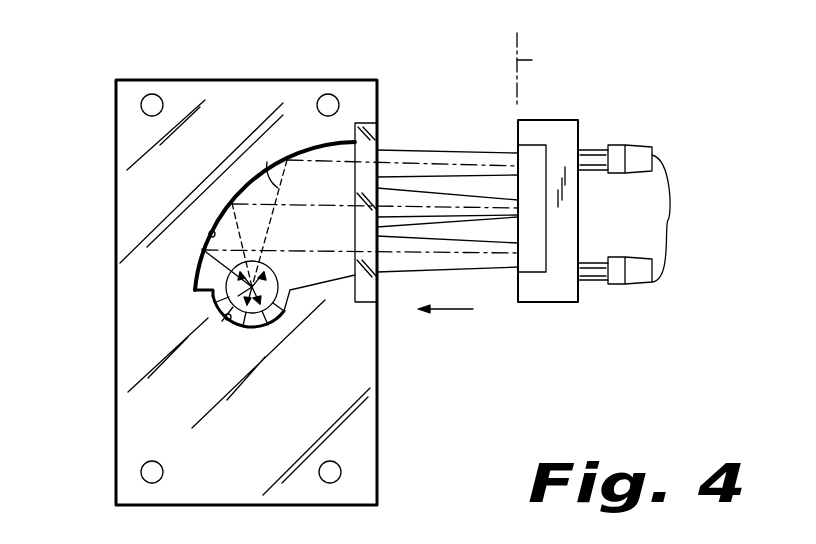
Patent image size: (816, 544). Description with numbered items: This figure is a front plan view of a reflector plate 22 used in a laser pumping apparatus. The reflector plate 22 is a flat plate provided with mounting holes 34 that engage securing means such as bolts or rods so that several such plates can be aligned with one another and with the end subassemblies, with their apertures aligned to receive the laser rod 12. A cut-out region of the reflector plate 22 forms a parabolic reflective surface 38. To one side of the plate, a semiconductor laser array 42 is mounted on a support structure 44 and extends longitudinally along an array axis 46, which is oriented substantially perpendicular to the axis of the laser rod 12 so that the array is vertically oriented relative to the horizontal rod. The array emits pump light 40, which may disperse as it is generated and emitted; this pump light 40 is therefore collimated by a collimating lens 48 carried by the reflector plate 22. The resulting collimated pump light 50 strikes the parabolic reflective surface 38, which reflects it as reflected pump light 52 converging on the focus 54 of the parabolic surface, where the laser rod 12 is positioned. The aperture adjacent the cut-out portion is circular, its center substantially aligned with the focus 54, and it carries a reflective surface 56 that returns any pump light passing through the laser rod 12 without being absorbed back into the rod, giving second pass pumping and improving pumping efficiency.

The reflector plate 22 is at (83, 120).
The mounting hole 34 is at (151, 95).
The reflected pump light 52 is at (283, 158).
The parabolic reflective surface 38 is at (209, 232).
The laser rod 12 is at (226, 283).
The focus 54 is at (225, 317).
The reflective surface 56 is at (220, 326).
The collimated pump light 50 is at (325, 260).
The collimating lens 48 is at (384, 124).
The pump light 40 is at (433, 132).
The array axis 46 is at (533, 55).
The semiconductor laser array 42 is at (556, 150).
The support structure 44 is at (669, 213).